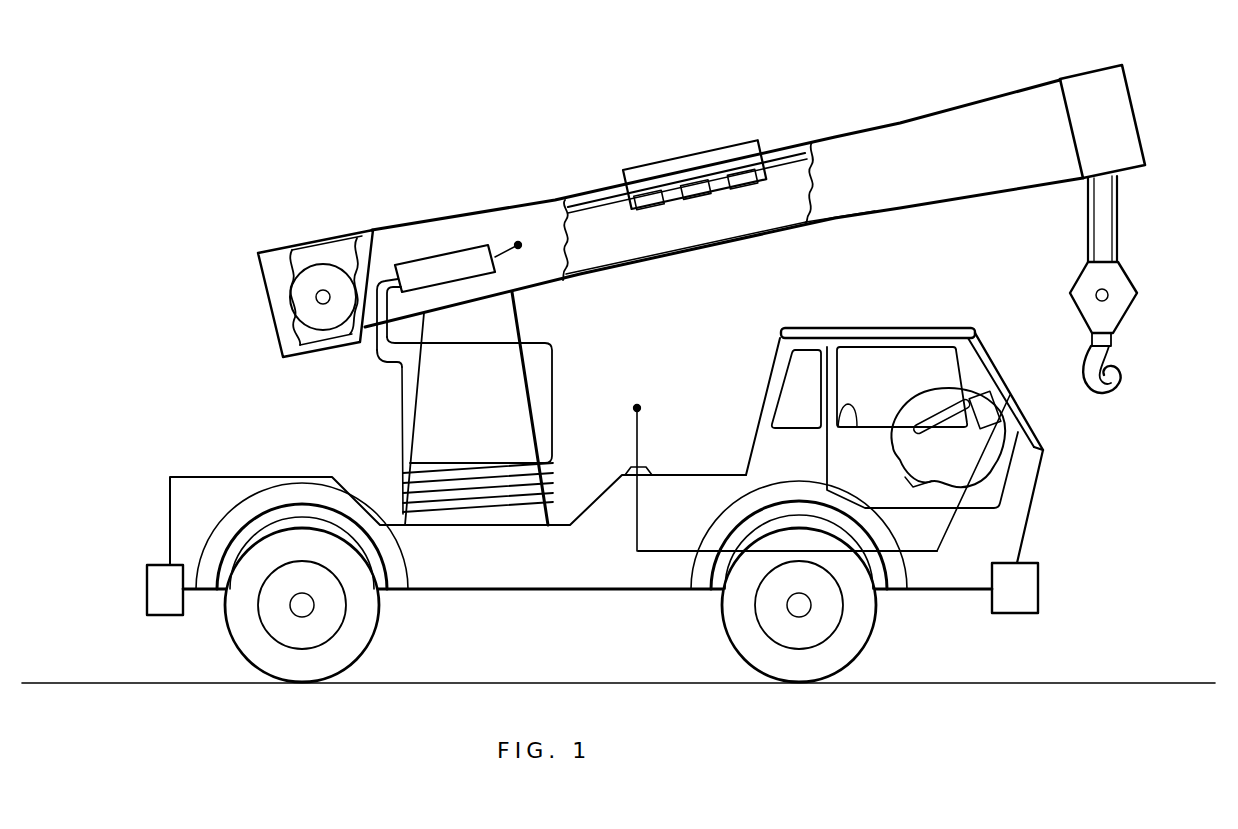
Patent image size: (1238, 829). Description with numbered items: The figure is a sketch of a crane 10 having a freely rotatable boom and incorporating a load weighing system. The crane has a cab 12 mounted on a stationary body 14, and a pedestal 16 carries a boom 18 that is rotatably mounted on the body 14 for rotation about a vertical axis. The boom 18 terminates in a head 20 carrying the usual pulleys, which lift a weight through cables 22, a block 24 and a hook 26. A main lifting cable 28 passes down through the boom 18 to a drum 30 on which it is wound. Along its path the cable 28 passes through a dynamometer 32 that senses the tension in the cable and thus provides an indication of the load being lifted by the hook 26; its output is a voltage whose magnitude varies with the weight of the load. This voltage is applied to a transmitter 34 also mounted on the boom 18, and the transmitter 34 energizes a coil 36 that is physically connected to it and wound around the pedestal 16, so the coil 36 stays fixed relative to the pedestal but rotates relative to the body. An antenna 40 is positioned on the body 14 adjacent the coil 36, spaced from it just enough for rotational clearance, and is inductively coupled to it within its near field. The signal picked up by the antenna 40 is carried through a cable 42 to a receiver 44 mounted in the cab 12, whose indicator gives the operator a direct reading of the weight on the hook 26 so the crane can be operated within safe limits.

The crane vehicle 10 is at (1168, 457).
The cab 12 is at (951, 316).
The stationary body 14 is at (503, 571).
The pedestal 16 is at (513, 316).
The boom 18 is at (518, 205).
The head 20 is at (1103, 80).
The cables 22 is at (1115, 192).
The block 24 is at (1123, 303).
The hook 26 is at (1098, 390).
The main lifting cable 28 is at (797, 160).
The drum 30 is at (323, 270).
The dynamometer 32 is at (688, 155).
The transmitter 34 is at (440, 263).
The coil 36 is at (545, 473).
The antenna 40 is at (637, 430).
The cable 42 is at (673, 552).
The receiver 44 is at (1000, 408).